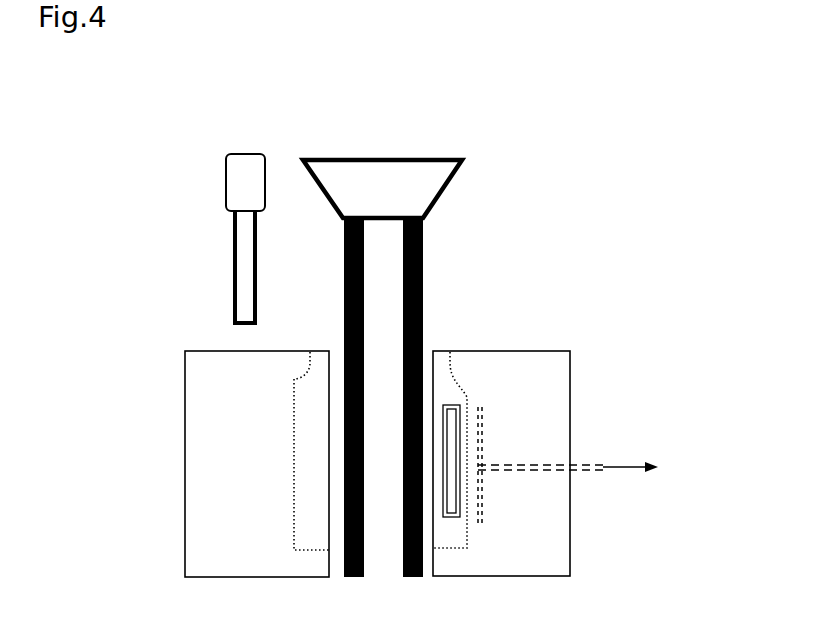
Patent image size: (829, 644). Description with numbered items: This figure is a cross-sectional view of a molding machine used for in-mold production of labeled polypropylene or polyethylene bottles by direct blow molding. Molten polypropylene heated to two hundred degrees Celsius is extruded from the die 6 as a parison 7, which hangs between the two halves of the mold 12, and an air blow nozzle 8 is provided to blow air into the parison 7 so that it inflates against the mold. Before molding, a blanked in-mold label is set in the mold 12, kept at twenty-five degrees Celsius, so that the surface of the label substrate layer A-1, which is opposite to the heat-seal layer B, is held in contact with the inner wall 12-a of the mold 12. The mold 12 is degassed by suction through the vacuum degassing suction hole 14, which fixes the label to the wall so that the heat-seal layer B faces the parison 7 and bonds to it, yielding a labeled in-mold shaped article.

The die 6 is at (382, 193).
The parison 7 is at (422, 276).
The air blow nozzle 8 is at (247, 267).
The mold 12 is at (503, 372).
The inner wall 12-a is at (468, 400).
The surface of label substrate layer A-1 is at (457, 440).
The heat-seal layer B is at (447, 462).
The suction hole 14 is at (468, 523).